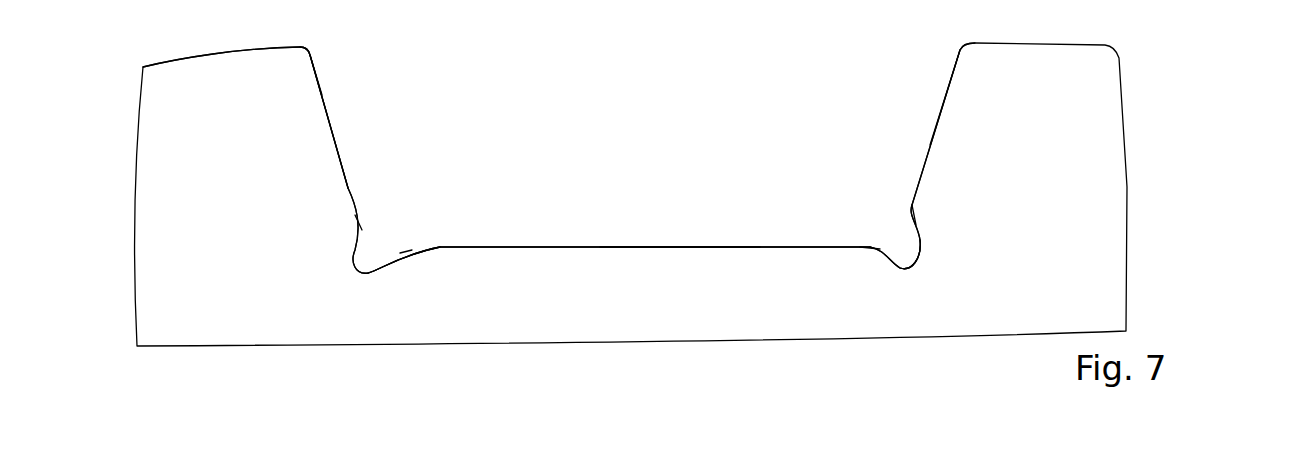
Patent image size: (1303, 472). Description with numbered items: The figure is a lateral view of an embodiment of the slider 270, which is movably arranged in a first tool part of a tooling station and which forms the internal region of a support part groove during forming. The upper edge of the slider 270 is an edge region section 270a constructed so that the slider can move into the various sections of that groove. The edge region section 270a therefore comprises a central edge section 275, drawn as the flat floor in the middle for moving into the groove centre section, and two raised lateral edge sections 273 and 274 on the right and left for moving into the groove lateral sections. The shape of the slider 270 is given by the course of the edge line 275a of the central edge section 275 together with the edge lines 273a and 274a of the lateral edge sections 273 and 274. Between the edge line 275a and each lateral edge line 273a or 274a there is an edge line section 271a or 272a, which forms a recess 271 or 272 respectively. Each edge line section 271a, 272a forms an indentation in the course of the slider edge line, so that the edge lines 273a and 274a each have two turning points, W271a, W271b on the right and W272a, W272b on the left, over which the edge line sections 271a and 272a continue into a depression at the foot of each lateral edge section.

The slider 270 is at (1153, 132).
The edge region section 270a is at (340, 148).
The recess 271 is at (893, 240).
The edge line section 271a is at (905, 243).
The recess 272 is at (373, 247).
The edge line section 272a is at (403, 248).
The lateral edge section 273 is at (940, 128).
The edge line 273a is at (937, 89).
The lateral edge section 274 is at (348, 188).
The edge line 274a is at (325, 85).
The central edge section 275 is at (580, 247).
The edge line 275a is at (670, 243).
The turning point W271a is at (915, 215).
The turning point W271b is at (870, 250).
The turning point W272a is at (358, 225).
The turning point W272b is at (408, 253).